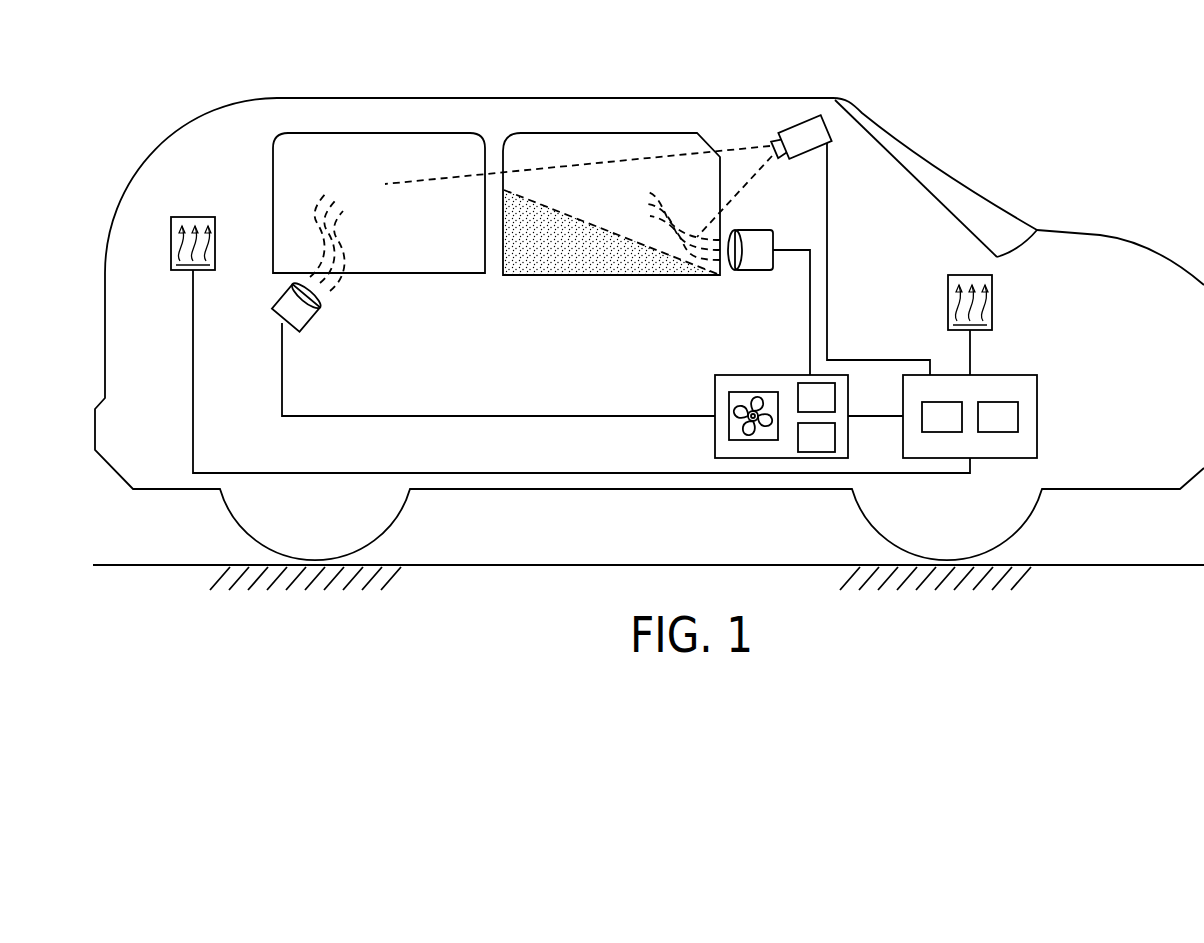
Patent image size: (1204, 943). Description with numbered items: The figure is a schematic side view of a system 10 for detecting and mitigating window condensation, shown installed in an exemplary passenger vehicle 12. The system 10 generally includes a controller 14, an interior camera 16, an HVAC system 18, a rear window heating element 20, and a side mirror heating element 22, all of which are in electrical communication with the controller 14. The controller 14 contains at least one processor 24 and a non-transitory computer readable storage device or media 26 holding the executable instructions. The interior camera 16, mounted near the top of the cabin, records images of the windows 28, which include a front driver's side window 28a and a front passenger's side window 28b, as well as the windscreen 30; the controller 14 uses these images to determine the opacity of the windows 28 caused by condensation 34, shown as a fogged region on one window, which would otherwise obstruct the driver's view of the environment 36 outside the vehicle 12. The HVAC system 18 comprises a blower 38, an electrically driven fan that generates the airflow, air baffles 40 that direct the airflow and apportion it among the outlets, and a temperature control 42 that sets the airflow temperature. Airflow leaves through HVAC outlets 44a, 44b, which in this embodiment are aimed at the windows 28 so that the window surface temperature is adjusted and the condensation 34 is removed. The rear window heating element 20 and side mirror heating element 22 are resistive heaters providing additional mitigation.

The system for detecting and mitigating window condensation 10 is at (968, 157).
The vehicle 12 is at (273, 98).
The controller 14 is at (1002, 416).
The interior camera 16 is at (802, 127).
The heating, ventilation, and air conditioning (HVAC) system 18 is at (775, 416).
The rear window heating element 20 is at (193, 217).
The side mirror heating element 22 is at (993, 302).
The processor 24 is at (942, 417).
The non-transitory computer readable storage device or media 26 is at (1037, 418).
The windows 28 is at (400, 133).
The front driver's side window 28a is at (632, 133).
The front passenger's side window 28b is at (352, 133).
The windscreen 30 is at (990, 211).
The condensation 34 is at (582, 254).
The environment 36 is at (1106, 83).
The blower 38 is at (729, 400).
The air baffles 40 is at (816, 397).
The temperature control 42 is at (816, 437).
The HVAC outlet 44a is at (750, 271).
The HVAC outlet 44b is at (313, 322).